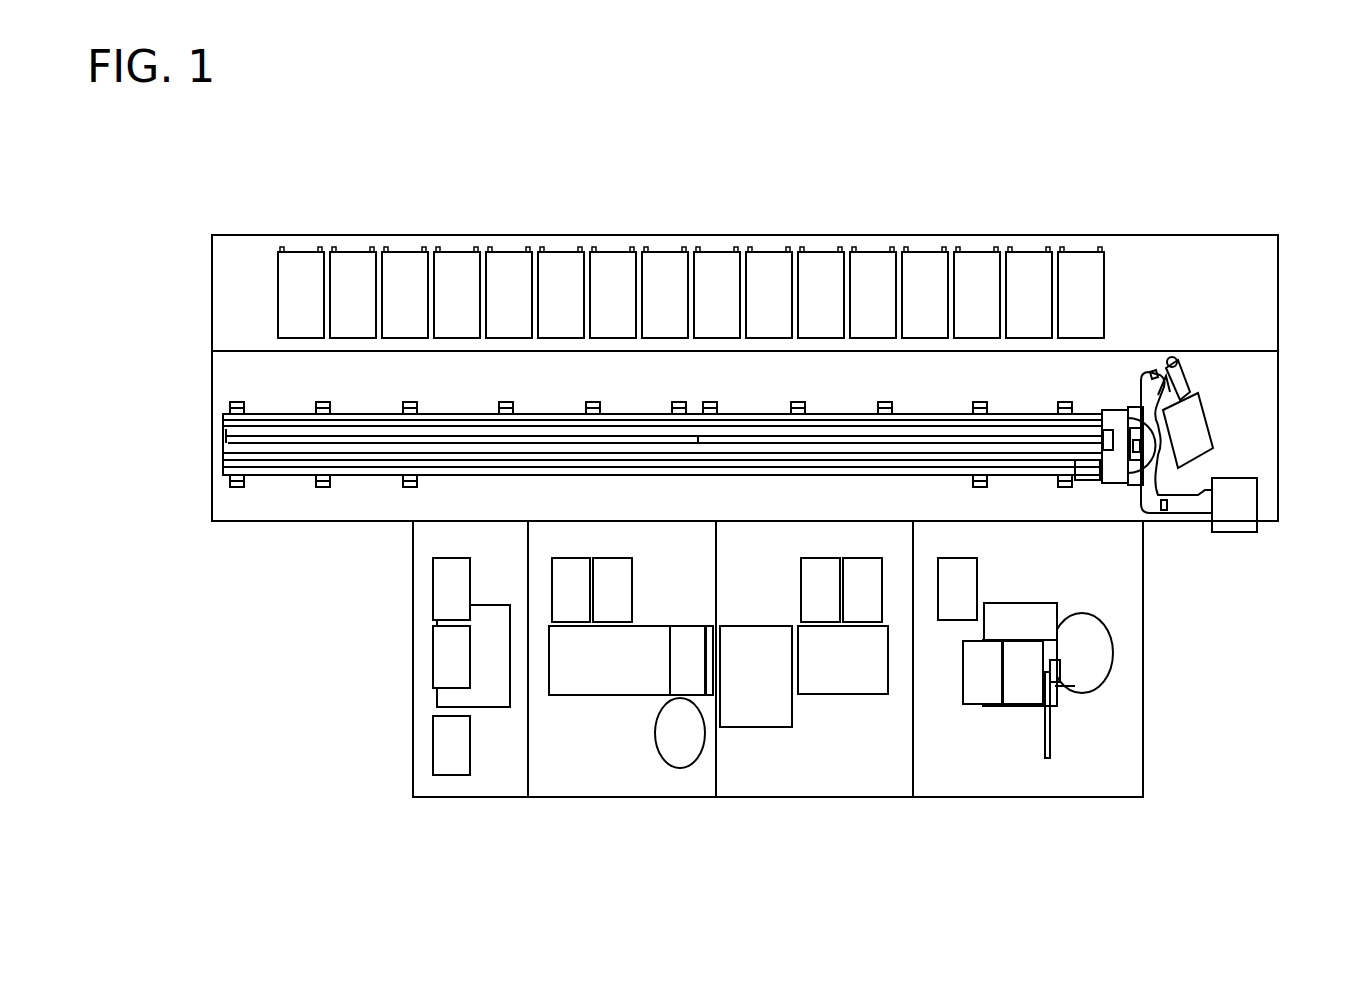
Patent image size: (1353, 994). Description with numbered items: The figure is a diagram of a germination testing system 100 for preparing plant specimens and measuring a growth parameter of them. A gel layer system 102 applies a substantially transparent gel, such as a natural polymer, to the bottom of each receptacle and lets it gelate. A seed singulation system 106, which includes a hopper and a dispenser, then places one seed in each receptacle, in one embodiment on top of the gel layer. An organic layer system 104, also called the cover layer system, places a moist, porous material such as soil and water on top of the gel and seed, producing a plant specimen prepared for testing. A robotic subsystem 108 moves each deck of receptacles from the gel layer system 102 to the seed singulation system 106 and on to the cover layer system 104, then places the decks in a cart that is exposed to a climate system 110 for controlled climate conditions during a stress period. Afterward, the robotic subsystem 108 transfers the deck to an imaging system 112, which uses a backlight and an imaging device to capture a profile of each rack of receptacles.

The germination testing system 100 is at (362, 152).
The gel layer system 102 is at (1092, 742).
The organic layer system 104 is at (768, 762).
The seed singulation system 106 is at (630, 778).
The robotic subsystem 108 is at (1240, 402).
The climate system 110 is at (1145, 250).
The imaging system 112 is at (415, 768).